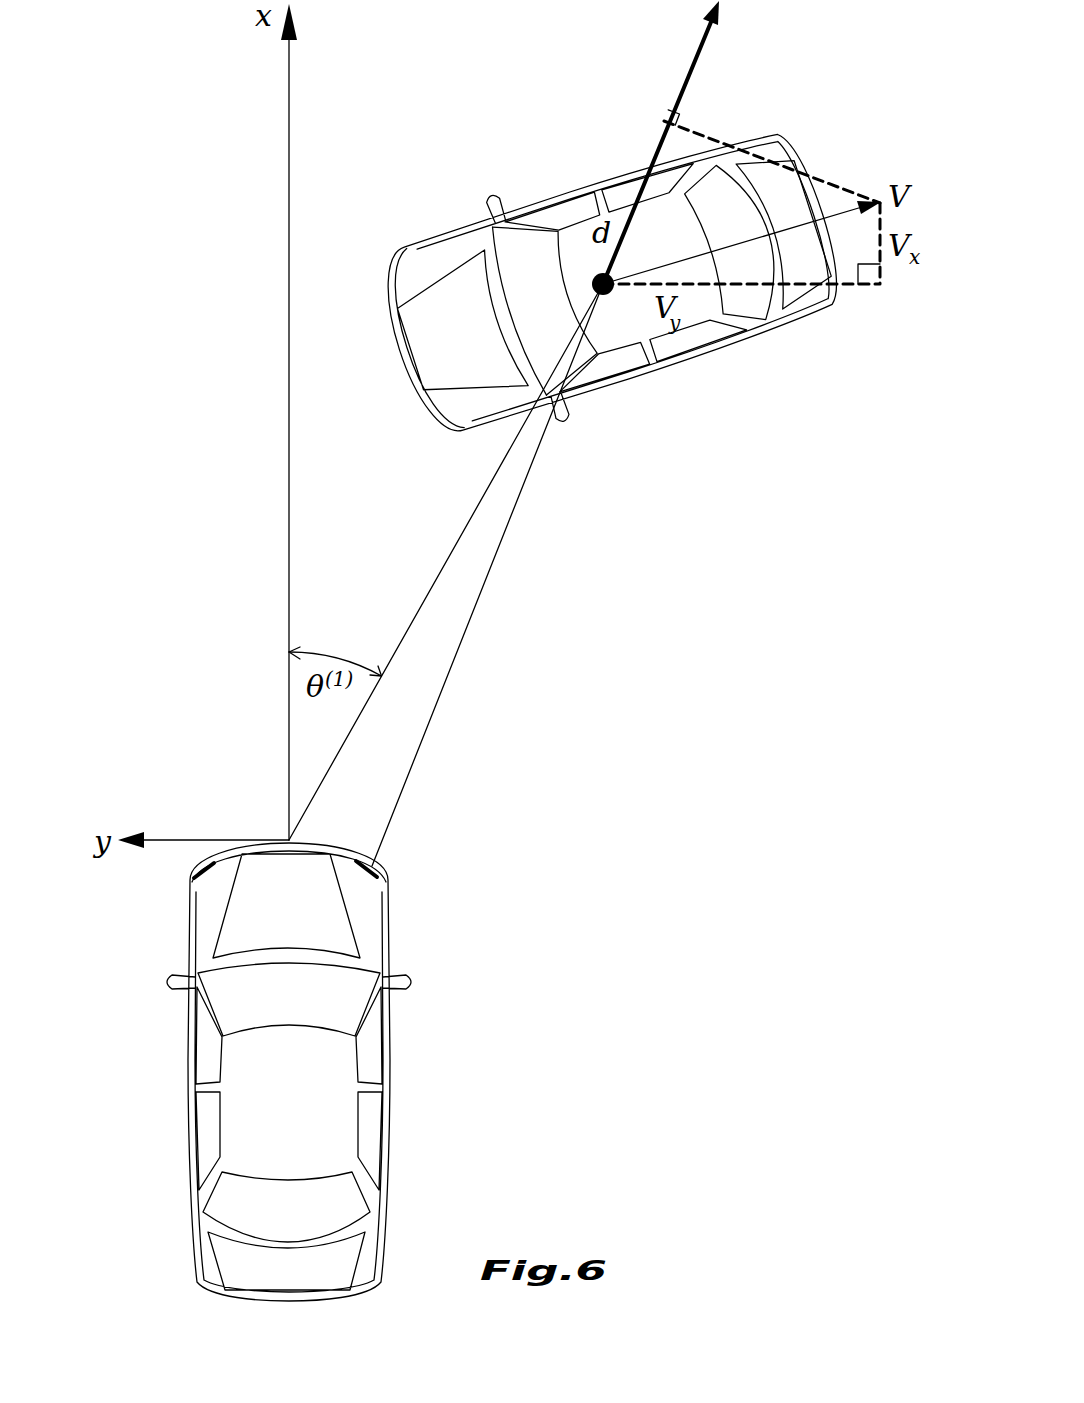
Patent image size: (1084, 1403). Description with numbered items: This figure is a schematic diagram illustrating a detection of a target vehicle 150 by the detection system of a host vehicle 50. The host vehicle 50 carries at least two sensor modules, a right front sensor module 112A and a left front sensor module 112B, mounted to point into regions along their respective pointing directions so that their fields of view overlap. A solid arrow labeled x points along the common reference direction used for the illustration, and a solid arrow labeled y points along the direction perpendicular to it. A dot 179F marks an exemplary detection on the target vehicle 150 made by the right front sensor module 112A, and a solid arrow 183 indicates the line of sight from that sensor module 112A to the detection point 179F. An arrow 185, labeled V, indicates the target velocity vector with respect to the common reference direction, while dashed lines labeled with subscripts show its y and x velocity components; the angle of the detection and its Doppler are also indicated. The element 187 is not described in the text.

The vehicle 50 is at (383, 1090).
The right front sensor module 112A is at (385, 862).
The left front sensor module 112B is at (192, 863).
The target vehicle 150 is at (602, 385).
The detection point 179F is at (545, 233).
The line of sight 183 is at (683, 83).
The target velocity vector 185 is at (738, 240).
The velocity projection onto heading axis 187 is at (638, 188).